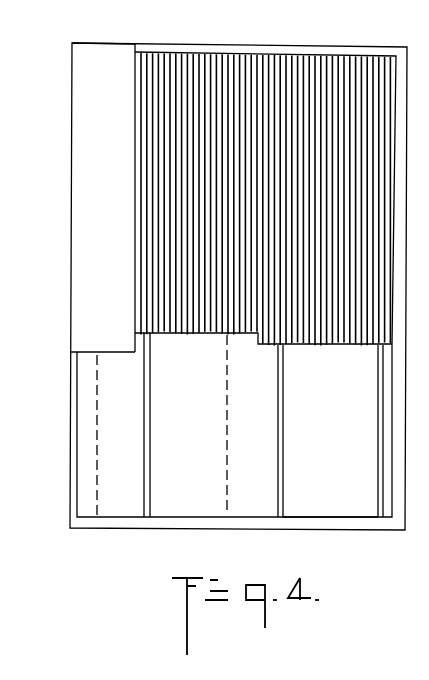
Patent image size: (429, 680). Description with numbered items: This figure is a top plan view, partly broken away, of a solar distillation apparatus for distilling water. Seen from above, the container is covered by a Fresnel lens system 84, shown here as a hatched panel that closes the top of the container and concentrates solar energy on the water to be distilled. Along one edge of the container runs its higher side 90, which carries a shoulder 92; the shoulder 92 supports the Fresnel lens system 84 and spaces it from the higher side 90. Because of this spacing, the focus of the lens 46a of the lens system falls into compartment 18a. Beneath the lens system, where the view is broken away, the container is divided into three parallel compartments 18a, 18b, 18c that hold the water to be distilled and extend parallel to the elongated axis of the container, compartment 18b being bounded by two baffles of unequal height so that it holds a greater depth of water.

The Fresnel lens system 84 is at (349, 72).
The lens 46a is at (212, 52).
The shoulder 92 is at (90, 143).
The higher side 90 is at (73, 413).
The compartment 18a is at (137, 423).
The compartment 18b is at (210, 423).
The compartment 18c is at (352, 431).